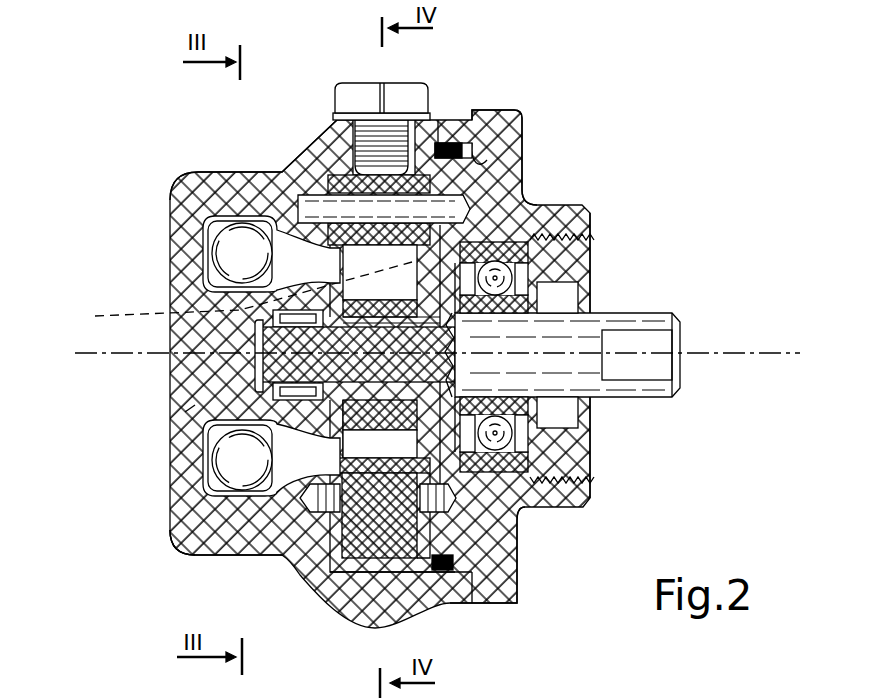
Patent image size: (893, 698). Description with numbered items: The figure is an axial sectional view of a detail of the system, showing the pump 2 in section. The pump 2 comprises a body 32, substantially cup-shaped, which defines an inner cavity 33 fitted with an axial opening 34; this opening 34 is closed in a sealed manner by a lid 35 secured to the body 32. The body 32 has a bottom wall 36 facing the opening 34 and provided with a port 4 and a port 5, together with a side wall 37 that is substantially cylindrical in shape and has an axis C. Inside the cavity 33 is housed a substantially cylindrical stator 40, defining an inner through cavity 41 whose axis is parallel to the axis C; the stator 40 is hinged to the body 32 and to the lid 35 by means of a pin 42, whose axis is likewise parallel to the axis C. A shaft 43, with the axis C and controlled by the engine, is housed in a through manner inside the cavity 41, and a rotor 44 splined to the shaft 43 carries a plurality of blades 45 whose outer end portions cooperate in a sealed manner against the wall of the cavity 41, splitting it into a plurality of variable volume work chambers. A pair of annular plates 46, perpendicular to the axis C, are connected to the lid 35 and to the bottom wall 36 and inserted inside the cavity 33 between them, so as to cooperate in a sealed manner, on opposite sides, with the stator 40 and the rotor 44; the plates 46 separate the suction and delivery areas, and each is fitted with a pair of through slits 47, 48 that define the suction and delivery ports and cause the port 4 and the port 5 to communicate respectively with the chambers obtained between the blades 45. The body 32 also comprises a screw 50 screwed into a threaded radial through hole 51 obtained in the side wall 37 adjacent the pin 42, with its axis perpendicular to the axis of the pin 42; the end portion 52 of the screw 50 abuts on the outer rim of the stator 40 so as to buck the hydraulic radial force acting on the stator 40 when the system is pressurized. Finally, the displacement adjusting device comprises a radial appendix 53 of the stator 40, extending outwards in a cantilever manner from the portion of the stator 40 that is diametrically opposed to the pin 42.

The pump 2 is at (612, 92).
The port 4 is at (243, 468).
The port 5 is at (232, 238).
The body 32 is at (192, 192).
The inner cavity 33 is at (345, 177).
The axial opening 34 is at (475, 163).
The lid 35 is at (502, 203).
The bottom wall 36 is at (187, 403).
The side wall 37 is at (432, 143).
The stator 40 is at (300, 212).
The inner through cavity 41 is at (520, 230).
The pin 42 is at (460, 195).
The shaft 43 is at (563, 337).
The rotor 44 is at (465, 532).
The blades 45 is at (290, 607).
The annular plates 46 is at (185, 412).
The through slit 47 is at (335, 270).
The through slit 48 is at (177, 543).
The screw 50 is at (375, 147).
The threaded radial through hole 51 is at (363, 142).
The end portion 52 is at (380, 175).
The radial appendix 53 is at (372, 525).
The axis C is at (708, 353).